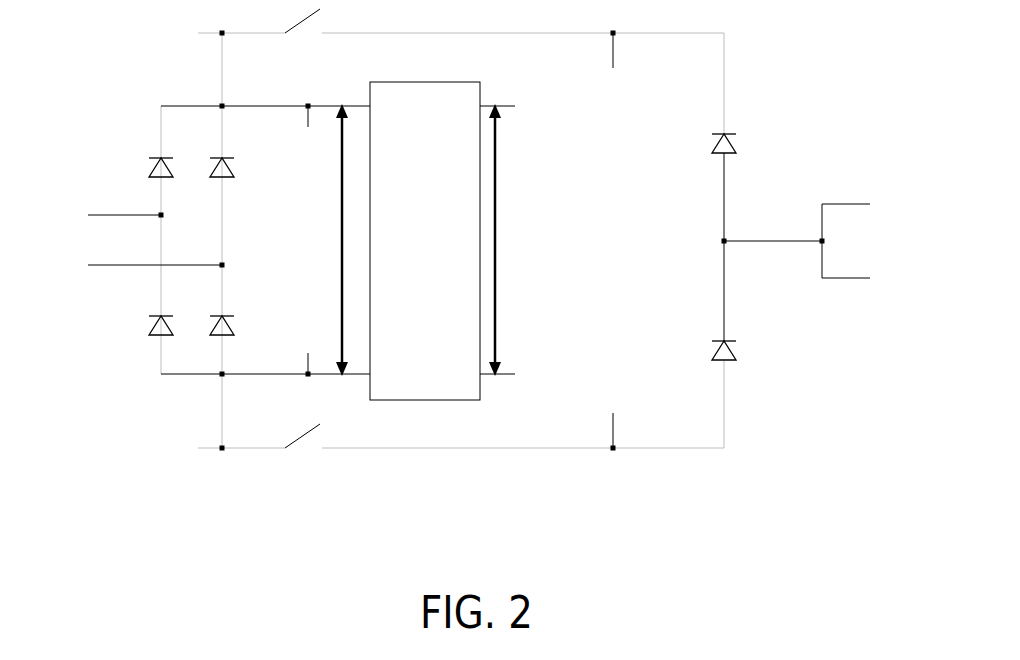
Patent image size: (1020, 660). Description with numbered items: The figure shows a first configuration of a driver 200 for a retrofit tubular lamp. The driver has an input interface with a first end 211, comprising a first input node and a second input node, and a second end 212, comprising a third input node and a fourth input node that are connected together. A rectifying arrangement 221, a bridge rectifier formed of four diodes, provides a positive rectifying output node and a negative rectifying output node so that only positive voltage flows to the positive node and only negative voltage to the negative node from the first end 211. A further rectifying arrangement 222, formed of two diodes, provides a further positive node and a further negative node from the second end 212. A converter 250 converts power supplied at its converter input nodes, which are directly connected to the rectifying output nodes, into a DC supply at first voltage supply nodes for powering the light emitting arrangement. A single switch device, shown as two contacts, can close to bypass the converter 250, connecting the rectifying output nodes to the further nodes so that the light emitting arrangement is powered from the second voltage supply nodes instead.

The driver 200 is at (474, 300).
The first end 211 is at (138, 240).
The second end 212 is at (864, 288).
The rectifying arrangement 221 is at (230, 277).
The further rectifying arrangement 222 is at (727, 240).
The converter 250 is at (459, 241).